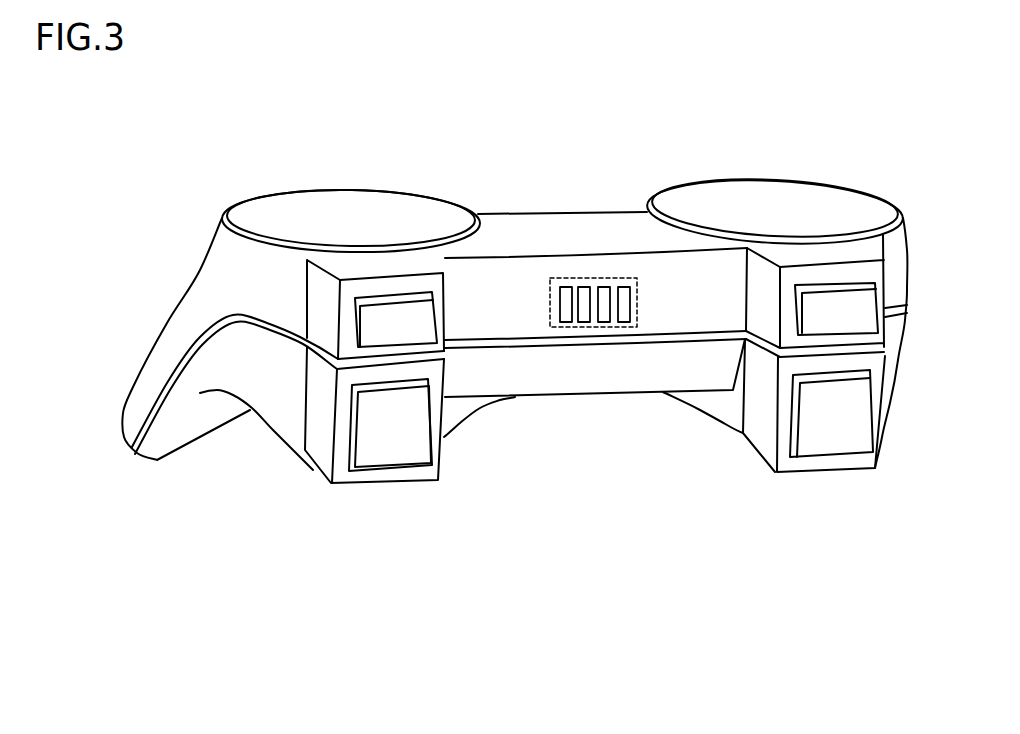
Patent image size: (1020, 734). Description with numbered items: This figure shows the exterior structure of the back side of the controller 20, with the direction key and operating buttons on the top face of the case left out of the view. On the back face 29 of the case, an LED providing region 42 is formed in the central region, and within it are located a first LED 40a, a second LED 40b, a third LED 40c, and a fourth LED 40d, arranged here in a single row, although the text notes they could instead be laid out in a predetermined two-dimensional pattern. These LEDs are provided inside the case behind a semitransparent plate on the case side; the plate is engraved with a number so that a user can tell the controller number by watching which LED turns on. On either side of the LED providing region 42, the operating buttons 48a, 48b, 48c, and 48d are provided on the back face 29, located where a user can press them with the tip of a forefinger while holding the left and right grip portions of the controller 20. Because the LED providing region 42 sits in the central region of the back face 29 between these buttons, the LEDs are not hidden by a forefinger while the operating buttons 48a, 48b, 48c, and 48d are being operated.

The controller 20 is at (527, 624).
The back face 29 is at (698, 287).
The LED providing region 42 is at (593, 277).
The first LED 40a is at (565, 323).
The second LED 40b is at (584, 323).
The third LED 40c is at (605, 323).
The fourth LED 40d is at (625, 323).
The operating button 48a is at (400, 315).
The operating button 48b is at (840, 300).
The operating button 48c is at (395, 450).
The operating button 48d is at (835, 437).